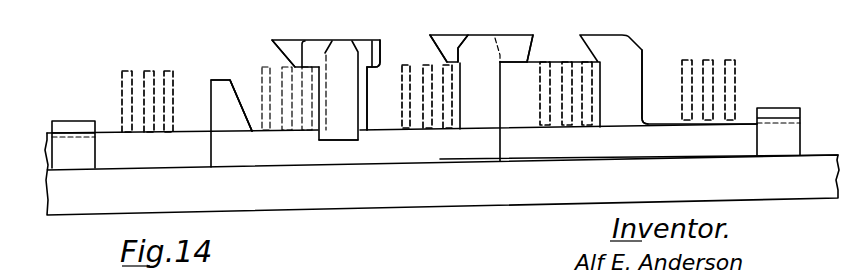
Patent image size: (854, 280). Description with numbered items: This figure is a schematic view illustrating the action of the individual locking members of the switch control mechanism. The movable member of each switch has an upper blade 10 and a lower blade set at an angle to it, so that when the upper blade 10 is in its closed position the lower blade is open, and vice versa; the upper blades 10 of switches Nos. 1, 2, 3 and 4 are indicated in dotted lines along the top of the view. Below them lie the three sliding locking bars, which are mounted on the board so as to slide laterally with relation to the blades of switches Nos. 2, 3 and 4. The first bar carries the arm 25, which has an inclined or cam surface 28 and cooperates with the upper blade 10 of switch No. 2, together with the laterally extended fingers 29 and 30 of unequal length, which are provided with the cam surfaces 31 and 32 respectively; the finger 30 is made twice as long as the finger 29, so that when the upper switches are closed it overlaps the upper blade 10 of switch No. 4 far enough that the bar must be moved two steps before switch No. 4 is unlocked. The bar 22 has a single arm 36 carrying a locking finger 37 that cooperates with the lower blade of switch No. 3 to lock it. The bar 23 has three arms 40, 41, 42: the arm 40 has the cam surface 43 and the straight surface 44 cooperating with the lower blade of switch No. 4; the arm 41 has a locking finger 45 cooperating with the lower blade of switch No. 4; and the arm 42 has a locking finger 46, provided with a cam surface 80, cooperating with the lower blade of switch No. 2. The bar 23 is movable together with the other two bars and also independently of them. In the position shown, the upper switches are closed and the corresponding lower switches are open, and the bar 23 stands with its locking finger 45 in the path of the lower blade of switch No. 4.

The pin group 1 is at (699, 90).
The switch 2 is at (555, 93).
The switch 3 is at (417, 96).
The switch 4 is at (157, 96).
The upper blade 10 is at (172, 63).
The bar 22 is at (187, 166).
The bar 23 is at (437, 159).
The arm 25 is at (638, 63).
The inclined or cam surface 28 is at (595, 50).
The finger 29 is at (463, 34).
The finger 30 is at (290, 44).
The inclined or cam surface 31 is at (432, 47).
The inclined or cam surface 32 is at (272, 41).
The arm 36 is at (367, 112).
The locking finger 37 is at (380, 33).
The arm 40 is at (218, 98).
The arm 41 is at (350, 139).
The arm 42 is at (480, 111).
The cam surface 43 is at (236, 81).
The straight surface 44 is at (236, 108).
The locking finger 45 is at (343, 38).
The locking finger 46 is at (491, 38).
The cam surface 80 is at (535, 41).